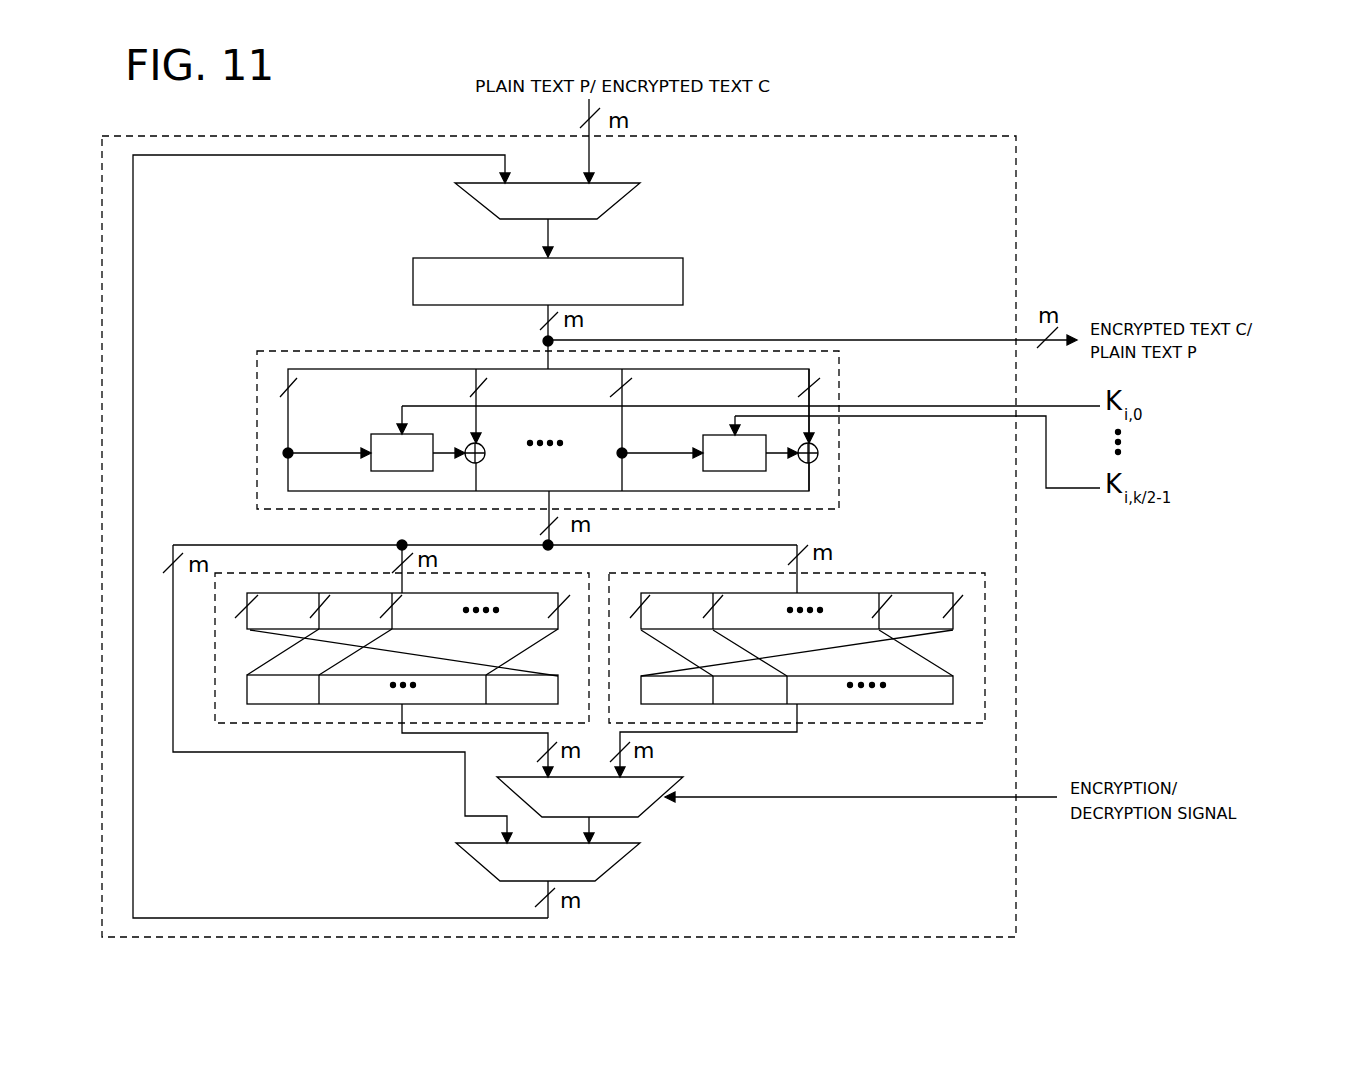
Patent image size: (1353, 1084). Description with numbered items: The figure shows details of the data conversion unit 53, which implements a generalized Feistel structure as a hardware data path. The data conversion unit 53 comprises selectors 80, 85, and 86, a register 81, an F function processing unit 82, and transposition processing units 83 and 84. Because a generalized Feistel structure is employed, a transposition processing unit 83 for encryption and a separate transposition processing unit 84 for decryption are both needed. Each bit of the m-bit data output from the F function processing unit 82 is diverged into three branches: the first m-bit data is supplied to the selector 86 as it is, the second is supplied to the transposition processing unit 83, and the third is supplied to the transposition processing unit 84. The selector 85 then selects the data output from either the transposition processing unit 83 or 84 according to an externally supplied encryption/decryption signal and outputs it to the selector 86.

The data conversion unit 53 is at (1016, 208).
The selector 80 is at (617, 206).
The register 81 is at (683, 285).
The F function processing unit 82 is at (292, 333).
The transposition processing unit 83 is at (297, 722).
The transposition processing unit 84 is at (863, 723).
The selector 85 is at (652, 805).
The selector 86 is at (610, 872).